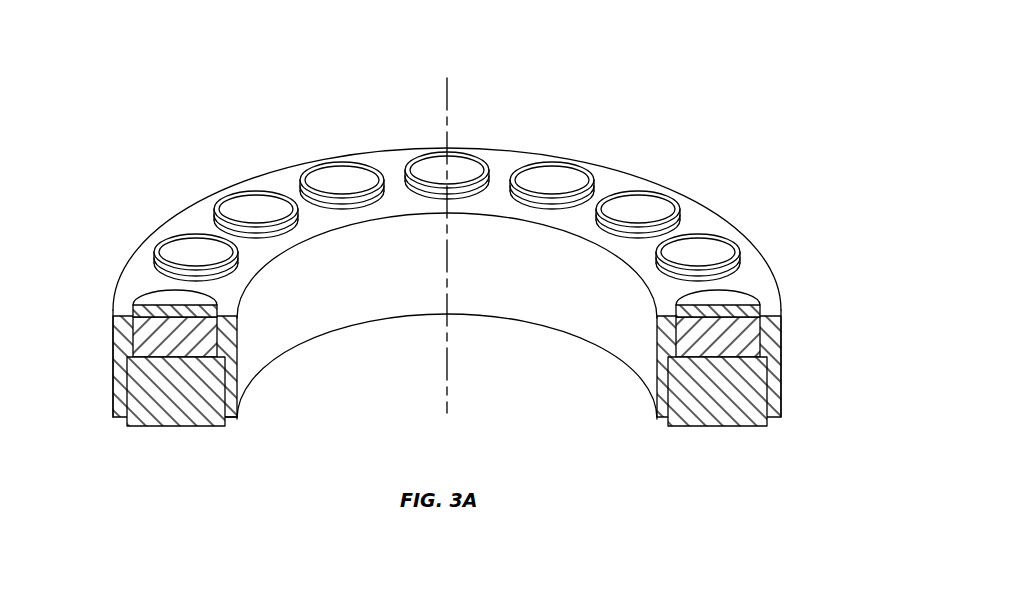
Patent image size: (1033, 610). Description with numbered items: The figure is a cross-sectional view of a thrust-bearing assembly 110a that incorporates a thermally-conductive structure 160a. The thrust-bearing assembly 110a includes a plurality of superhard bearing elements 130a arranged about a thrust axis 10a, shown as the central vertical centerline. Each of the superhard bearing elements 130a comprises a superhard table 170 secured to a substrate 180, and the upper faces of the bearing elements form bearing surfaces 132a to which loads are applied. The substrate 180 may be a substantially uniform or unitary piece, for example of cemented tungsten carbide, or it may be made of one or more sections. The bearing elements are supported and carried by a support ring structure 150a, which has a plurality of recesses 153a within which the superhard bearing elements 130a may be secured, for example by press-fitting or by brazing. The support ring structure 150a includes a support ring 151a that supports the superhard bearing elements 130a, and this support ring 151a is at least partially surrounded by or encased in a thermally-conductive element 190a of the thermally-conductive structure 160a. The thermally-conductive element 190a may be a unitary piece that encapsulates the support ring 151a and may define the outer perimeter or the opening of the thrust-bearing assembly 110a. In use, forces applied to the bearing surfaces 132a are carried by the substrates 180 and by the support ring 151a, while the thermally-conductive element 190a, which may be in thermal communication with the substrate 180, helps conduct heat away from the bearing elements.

The thrust axis 10a is at (448, 110).
The thrust-bearing assembly 110a is at (688, 60).
The superhard bearing elements 130a is at (746, 243).
The bearing surfaces 132a is at (698, 253).
The thermally-conductive structure 160a is at (795, 295).
The support ring structure 150a is at (206, 373).
The support ring 151a is at (195, 422).
The recesses 153a is at (224, 326).
The superhard table 170 is at (143, 313).
The substrate 180 is at (212, 338).
The thermally-conductive element 190a is at (235, 403).